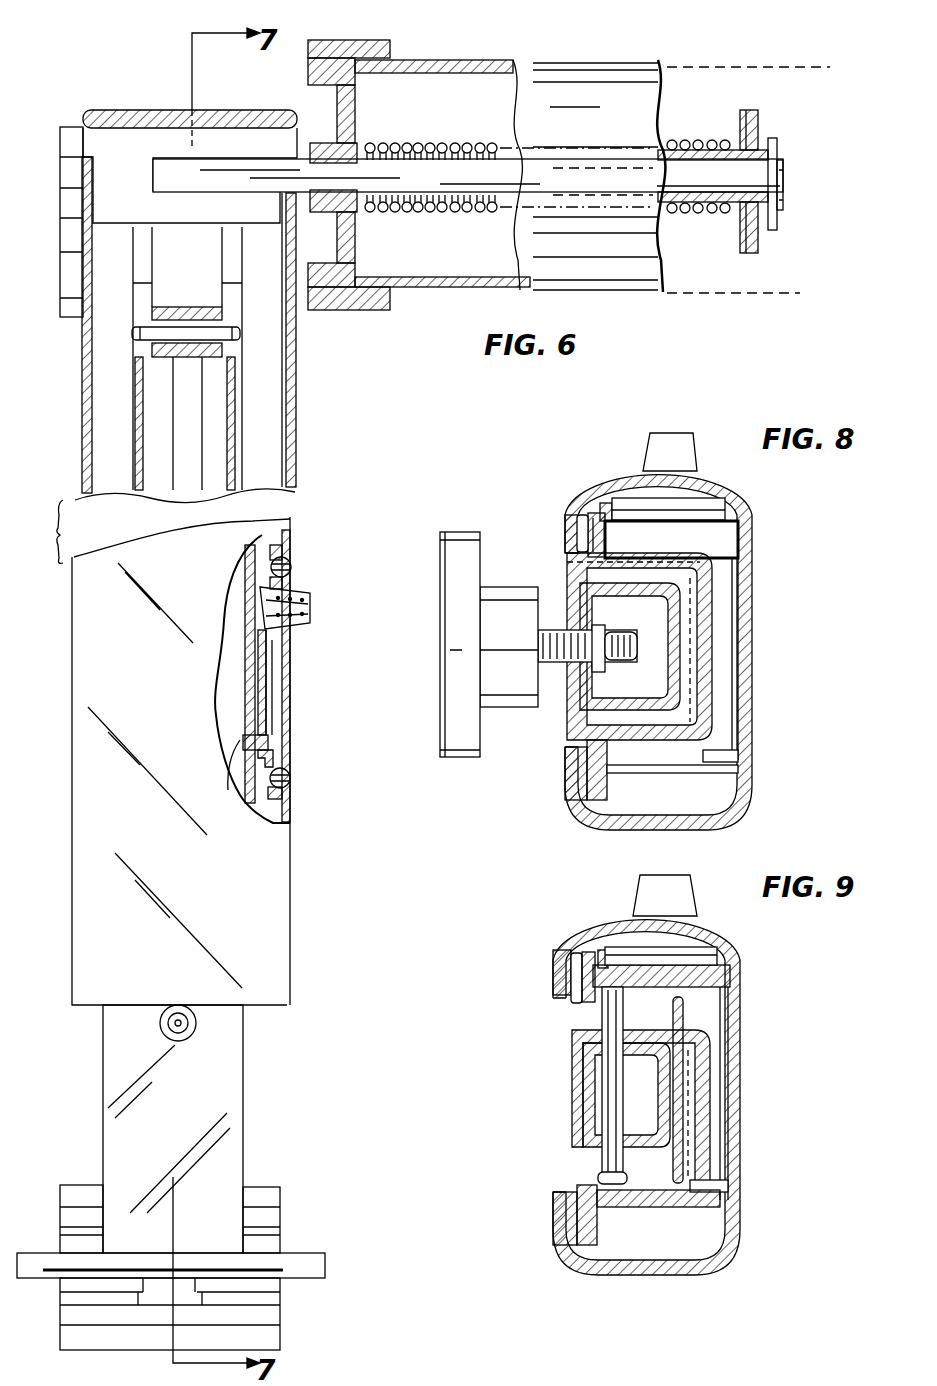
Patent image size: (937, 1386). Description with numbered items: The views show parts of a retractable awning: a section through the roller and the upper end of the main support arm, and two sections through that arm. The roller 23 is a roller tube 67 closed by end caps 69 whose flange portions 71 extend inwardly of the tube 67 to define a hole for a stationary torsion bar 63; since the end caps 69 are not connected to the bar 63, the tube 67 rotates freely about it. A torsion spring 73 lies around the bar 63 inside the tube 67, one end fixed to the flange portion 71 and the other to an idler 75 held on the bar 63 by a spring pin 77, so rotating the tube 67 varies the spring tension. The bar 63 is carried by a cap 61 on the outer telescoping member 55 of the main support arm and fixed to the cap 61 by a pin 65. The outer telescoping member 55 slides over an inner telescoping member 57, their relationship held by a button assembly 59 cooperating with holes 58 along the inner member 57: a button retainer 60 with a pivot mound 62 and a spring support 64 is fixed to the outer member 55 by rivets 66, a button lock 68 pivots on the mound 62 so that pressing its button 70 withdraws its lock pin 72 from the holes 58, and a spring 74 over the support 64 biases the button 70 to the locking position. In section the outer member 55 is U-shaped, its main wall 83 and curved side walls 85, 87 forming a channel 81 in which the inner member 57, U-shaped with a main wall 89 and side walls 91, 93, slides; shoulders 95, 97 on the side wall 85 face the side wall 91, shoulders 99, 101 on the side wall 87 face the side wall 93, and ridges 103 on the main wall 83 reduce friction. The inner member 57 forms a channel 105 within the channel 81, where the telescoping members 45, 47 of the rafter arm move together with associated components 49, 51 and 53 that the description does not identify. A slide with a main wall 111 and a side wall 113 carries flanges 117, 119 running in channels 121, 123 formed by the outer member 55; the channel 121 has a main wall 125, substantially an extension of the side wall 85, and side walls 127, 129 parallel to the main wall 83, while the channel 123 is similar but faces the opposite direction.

In FIG. 6, the roller 23 is at (315, 335).
In FIG. 8, the telescoping member 45 is at (563, 673).
In FIG. 8, the telescoping member 47 is at (577, 727).
In FIG. 9, the telescoping member 47 is at (576, 1145).
In FIG. 8, the knob disc 49 is at (445, 745).
In FIG. 8, the nut 51 is at (606, 634).
In FIG. 8, the rod end 53 is at (608, 673).
In FIG. 6, the outer telescoping member 55 is at (292, 703).
In FIG. 8, the outer telescoping member 55 is at (752, 505).
In FIG. 9, the outer telescoping member 55 is at (740, 946).
In FIG. 8, the inner telescoping member 57 is at (745, 801).
In FIG. 9, the inner telescoping member 57 is at (692, 1245).
In FIG. 6, the holes 58 is at (245, 742).
In FIG. 6, the button assembly 59 is at (352, 552).
In FIG. 8, the button assembly 59 is at (721, 459).
In FIG. 9, the button assembly 59 is at (737, 912).
In FIG. 6, the button retainer 60 is at (273, 765).
In FIG. 6, the cap 61 is at (118, 109).
In FIG. 6, the pivot mound 62 is at (266, 666).
In FIG. 6, the torsion bar 63 is at (233, 165).
In FIG. 6, the spring support 64 is at (258, 603).
In FIG. 6, the pin 65 is at (196, 169).
In FIG. 6, the rivets 66 is at (291, 562).
In FIG. 6, the roller tube 67 is at (438, 289).
In FIG. 6, the button lock 68 is at (320, 607).
In FIG. 8, the button lock 68 is at (681, 438).
In FIG. 9, the button lock 68 is at (703, 900).
In FIG. 6, the end caps 69 is at (365, 310).
In FIG. 6, the button 70 is at (278, 592).
In FIG. 6, the flange portions 71 is at (380, 214).
In FIG. 6, the lock pin 72 is at (262, 744).
In FIG. 6, the torsion spring 73 is at (443, 214).
In FIG. 6, the spring 74 is at (262, 633).
In FIG. 6, the idler 75 is at (708, 217).
In FIG. 6, the spring pin 77 is at (778, 230).
In FIG. 8, the channel 81 is at (598, 515).
In FIG. 9, the channel 81 is at (615, 940).
In FIG. 8, the main wall 83 is at (752, 579).
In FIG. 9, the main wall 83 is at (740, 1040).
In FIG. 8, the side wall 85 is at (700, 478).
In FIG. 9, the side wall 85 is at (722, 934).
In FIG. 8, the side wall 87 is at (702, 826).
In FIG. 9, the side wall 87 is at (708, 1265).
In FIG. 8, the main wall 89 is at (705, 696).
In FIG. 9, the main wall 89 is at (703, 1135).
In FIG. 8, the side wall 91 is at (662, 540).
In FIG. 9, the side wall 91 is at (628, 972).
In FIG. 8, the side wall 93 is at (740, 770).
In FIG. 9, the side wall 93 is at (658, 1200).
In FIG. 8, the shoulder 95 is at (671, 539).
In FIG. 9, the shoulder 95 is at (604, 1000).
In FIG. 8, the shoulder 97 is at (740, 524).
In FIG. 9, the shoulder 97 is at (728, 966).
In FIG. 8, the shoulder 99 is at (622, 764).
In FIG. 9, the shoulder 99 is at (596, 1208).
In FIG. 8, the shoulder 101 is at (738, 756).
In FIG. 9, the shoulder 101 is at (728, 1190).
In FIG. 8, the ridges 103 is at (712, 678).
In FIG. 9, the ridges 103 is at (712, 1122).
In FIG. 8, the channel 105 is at (662, 750).
In FIG. 9, the channel 105 is at (637, 1203).
In FIG. 8, the main wall 111 is at (690, 633).
In FIG. 9, the main wall 111 is at (672, 1081).
In FIG. 9, the side wall 113 is at (685, 1010).
In FIG. 8, the flange 117 is at (572, 560).
In FIG. 9, the flange 117 is at (560, 1030).
In FIG. 8, the flange 119 is at (567, 779).
In FIG. 9, the flange 119 is at (575, 1208).
In FIG. 8, the channel 121 is at (522, 606).
In FIG. 9, the channel 121 is at (565, 1078).
In FIG. 8, the channel 123 is at (538, 766).
In FIG. 9, the channel 123 is at (556, 1179).
In FIG. 8, the main wall 125 is at (570, 510).
In FIG. 8, the side wall 127 is at (578, 517).
In FIG. 9, the side wall 127 is at (570, 997).
In FIG. 8, the side wall 129 is at (590, 535).
In FIG. 9, the side wall 129 is at (582, 968).